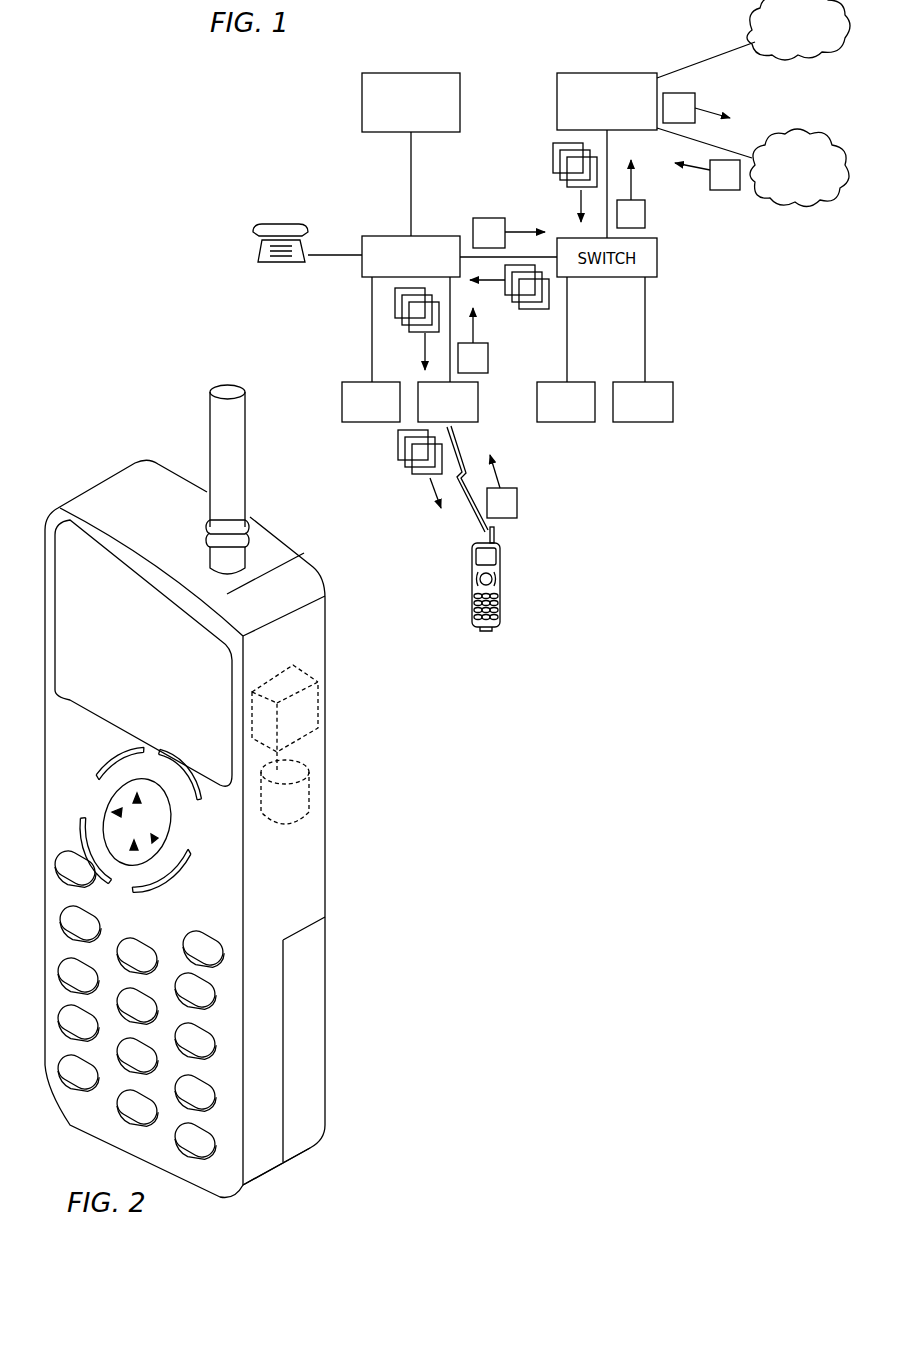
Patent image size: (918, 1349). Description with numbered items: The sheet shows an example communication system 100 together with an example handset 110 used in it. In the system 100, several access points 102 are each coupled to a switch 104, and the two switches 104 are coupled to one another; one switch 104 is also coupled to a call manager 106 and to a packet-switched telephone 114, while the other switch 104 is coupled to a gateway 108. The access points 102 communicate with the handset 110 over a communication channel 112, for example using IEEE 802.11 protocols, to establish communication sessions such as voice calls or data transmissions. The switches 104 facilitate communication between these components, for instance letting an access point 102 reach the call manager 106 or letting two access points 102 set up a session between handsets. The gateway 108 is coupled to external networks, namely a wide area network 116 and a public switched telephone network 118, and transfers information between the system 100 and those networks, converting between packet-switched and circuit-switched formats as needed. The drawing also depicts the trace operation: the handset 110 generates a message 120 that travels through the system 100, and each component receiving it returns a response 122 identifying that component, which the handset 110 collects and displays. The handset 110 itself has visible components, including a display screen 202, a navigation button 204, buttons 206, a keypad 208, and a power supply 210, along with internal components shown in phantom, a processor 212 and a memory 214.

In FIG. 1, the communication system 100 is at (308, 112).
In FIG. 1, the access points 102 is at (578, 422).
In FIG. 1, the switches 104 is at (378, 236).
In FIG. 1, the call manager 106 is at (407, 73).
In FIG. 1, the gateway 108 is at (612, 73).
In FIG. 1, the handset 110 is at (502, 595).
In FIG. 2, the handset 110 is at (118, 420).
In FIG. 1, the communication channels 112 is at (478, 524).
In FIG. 1, the packet-switched telephones 114 is at (276, 222).
In FIG. 1, the wide area network (WAN) 116 is at (795, 60).
In FIG. 1, the public switched telephone network (PSTN) 118 is at (795, 205).
In FIG. 1, the message 120 is at (488, 218).
In FIG. 1, the response 122 is at (724, 192).
In FIG. 2, the display screen 202 is at (138, 568).
In FIG. 2, the navigation button 204 is at (180, 873).
In FIG. 2, the buttons 206 is at (147, 862).
In FIG. 2, the keypad 208 is at (110, 1118).
In FIG. 2, the power supply 210 is at (303, 1148).
In FIG. 2, the processor 212 is at (322, 702).
In FIG. 2, the memory 214 is at (312, 797).